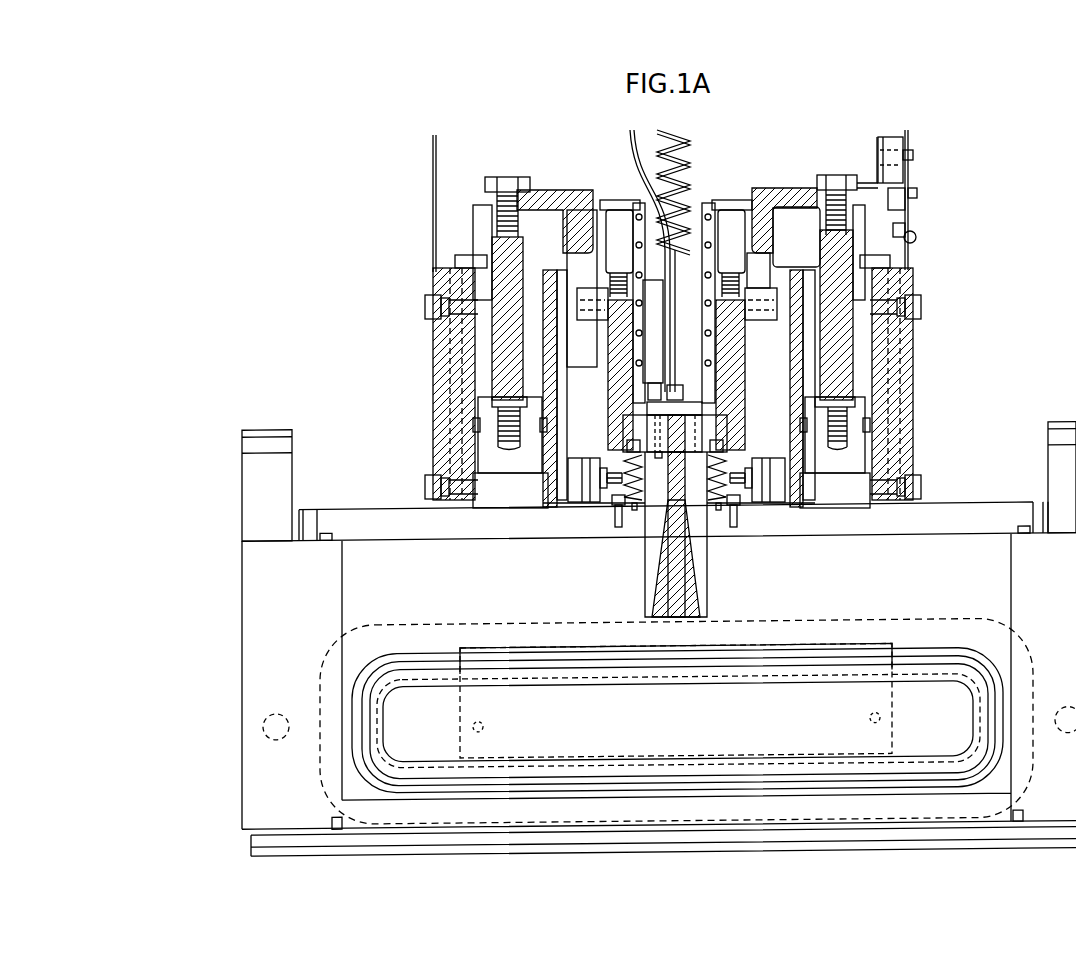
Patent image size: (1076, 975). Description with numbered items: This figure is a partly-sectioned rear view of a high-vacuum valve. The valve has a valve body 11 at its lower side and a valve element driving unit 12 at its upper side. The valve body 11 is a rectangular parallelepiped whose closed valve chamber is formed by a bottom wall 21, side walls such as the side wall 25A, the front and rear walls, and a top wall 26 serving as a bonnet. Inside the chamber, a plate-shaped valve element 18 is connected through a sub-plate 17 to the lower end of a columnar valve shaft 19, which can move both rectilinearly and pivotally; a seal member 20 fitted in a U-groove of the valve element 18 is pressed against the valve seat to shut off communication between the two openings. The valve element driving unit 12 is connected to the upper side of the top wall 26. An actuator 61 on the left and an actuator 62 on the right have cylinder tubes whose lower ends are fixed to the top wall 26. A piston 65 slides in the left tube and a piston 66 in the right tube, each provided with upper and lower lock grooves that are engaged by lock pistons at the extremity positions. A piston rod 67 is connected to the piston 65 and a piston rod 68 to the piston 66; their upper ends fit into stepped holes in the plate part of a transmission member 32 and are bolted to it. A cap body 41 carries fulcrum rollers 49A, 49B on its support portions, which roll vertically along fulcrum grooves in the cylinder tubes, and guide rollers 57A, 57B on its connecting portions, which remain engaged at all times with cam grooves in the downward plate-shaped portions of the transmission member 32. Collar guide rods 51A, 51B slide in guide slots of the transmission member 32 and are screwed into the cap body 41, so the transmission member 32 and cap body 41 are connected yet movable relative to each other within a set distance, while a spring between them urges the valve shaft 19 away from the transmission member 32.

The valve body 11 is at (245, 833).
The valve element driving unit 12 is at (923, 163).
The sub-plate 17 is at (857, 652).
The valve element 18 is at (962, 665).
The valve shaft 19 is at (648, 577).
The seal member 20 is at (932, 666).
The bottom wall 21 is at (443, 838).
The side wall 25A is at (258, 578).
The top wall 26 is at (990, 512).
The transmission member 32 is at (780, 200).
The cap body 41 is at (747, 420).
The fulcrum roller 49A is at (582, 495).
The fulcrum roller 49B is at (767, 492).
The collar guide rod 51A is at (620, 207).
The collar guide rod 51B is at (735, 207).
The guide roller 57A is at (590, 293).
The guide roller 57B is at (757, 290).
The actuator 61 is at (478, 352).
The actuator 62 is at (863, 345).
The piston 65 is at (490, 455).
The piston 66 is at (855, 453).
The piston rod 67 is at (500, 256).
The piston rod 68 is at (845, 245).